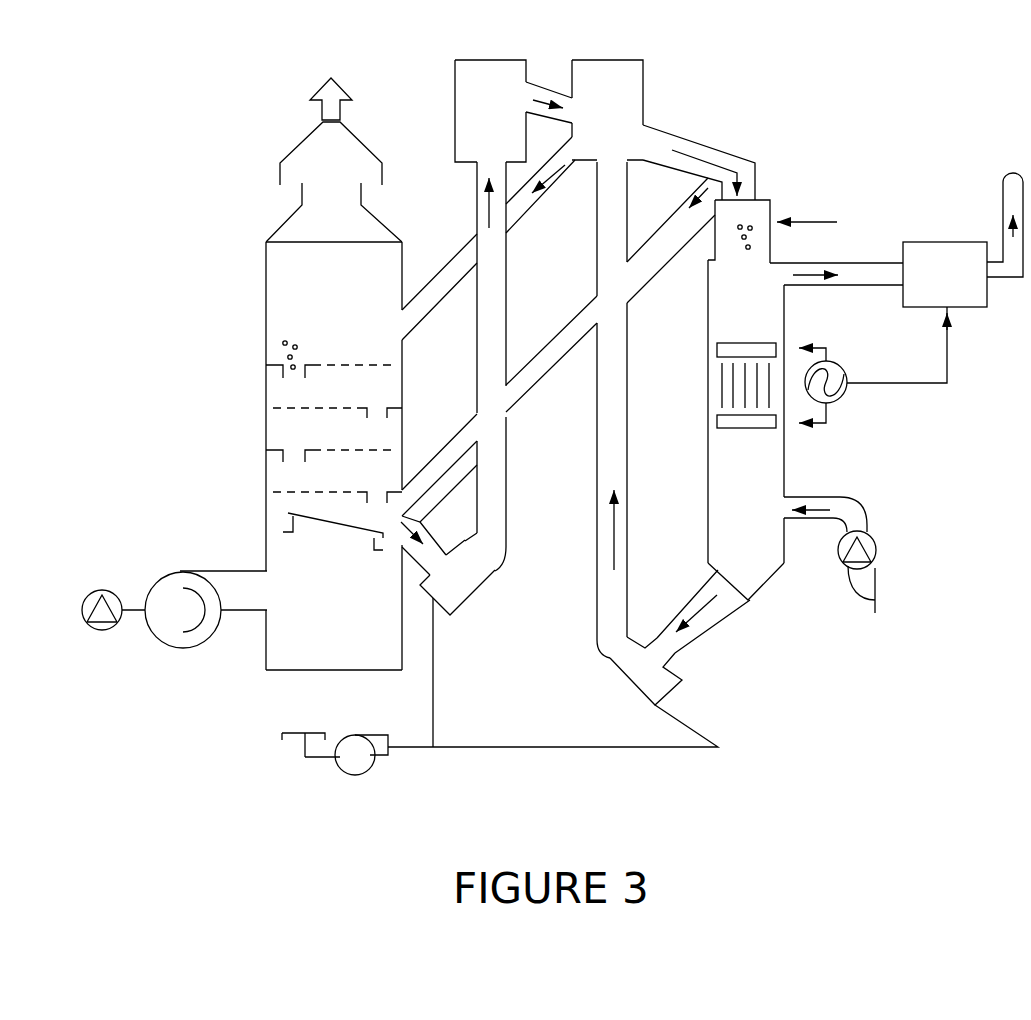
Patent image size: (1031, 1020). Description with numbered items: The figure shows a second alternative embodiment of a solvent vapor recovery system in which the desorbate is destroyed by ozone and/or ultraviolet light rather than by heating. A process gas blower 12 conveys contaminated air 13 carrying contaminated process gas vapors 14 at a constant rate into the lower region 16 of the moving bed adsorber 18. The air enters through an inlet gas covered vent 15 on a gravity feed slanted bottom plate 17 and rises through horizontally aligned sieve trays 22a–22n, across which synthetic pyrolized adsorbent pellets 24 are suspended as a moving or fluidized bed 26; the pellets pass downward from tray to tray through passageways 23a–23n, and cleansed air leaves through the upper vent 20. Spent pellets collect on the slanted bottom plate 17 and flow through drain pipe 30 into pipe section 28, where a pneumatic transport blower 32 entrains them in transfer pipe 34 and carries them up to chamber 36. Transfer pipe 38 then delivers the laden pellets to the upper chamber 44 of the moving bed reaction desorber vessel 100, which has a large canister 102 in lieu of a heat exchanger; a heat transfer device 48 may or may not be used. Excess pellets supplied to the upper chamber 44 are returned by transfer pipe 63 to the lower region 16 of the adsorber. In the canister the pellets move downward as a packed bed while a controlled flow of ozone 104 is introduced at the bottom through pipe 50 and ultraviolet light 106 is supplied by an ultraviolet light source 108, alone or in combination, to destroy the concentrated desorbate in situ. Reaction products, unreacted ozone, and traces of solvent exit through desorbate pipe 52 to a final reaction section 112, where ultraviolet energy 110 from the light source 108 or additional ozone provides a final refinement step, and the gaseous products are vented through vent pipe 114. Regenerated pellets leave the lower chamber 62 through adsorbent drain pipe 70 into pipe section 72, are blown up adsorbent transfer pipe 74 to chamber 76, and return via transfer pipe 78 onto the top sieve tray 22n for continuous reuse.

The process gas blower 12 is at (145, 635).
The contaminated air 13 is at (230, 592).
The contaminated process gas vapors 14 is at (270, 572).
The inlet gas covered vent 15 is at (357, 527).
The lower region 16 is at (270, 648).
The gravity feed slanted bottom plate 17 is at (282, 528).
The moving bed adsorber 18 is at (257, 460).
The upper vent 20 is at (293, 182).
The sieve tray 22a is at (278, 492).
The sieve tray 22n is at (378, 363).
The passageway 23a is at (378, 493).
The passageway 23n is at (282, 368).
The adsorbent pellets 24 is at (275, 340).
The moving or fluidized bed 26 is at (340, 448).
The pipe section 28 is at (470, 598).
The drain pipe 30 is at (418, 555).
The pneumatic transport blower 32 is at (375, 733).
The transfer pipe 34 is at (508, 488).
The chamber 36 is at (455, 130).
The transfer pipe 38 is at (538, 82).
The upper chamber 44 is at (772, 200).
The heat transfer device 48 is at (704, 370).
The pipe 50 is at (837, 512).
The desorbate pipe 52 is at (837, 287).
The lower chamber 62 is at (712, 508).
The transfer pipe 63 is at (590, 303).
The adsorbent drain pipe 70 is at (712, 622).
The pipe section 72 is at (620, 690).
The adsorbent transfer pipe 74 is at (628, 428).
The chamber 76 is at (643, 85).
The transfer pipe 78 is at (460, 253).
The moving bed reaction desorber vessel 100 is at (790, 189).
The large canister 102 is at (780, 258).
The ozone 104 is at (875, 610).
The ultraviolet light 106 is at (822, 425).
The ultraviolet light source 108 is at (833, 402).
The ultraviolet energy 110 is at (948, 353).
The final reaction section 112 is at (967, 252).
The vent pipe 114 is at (1007, 203).